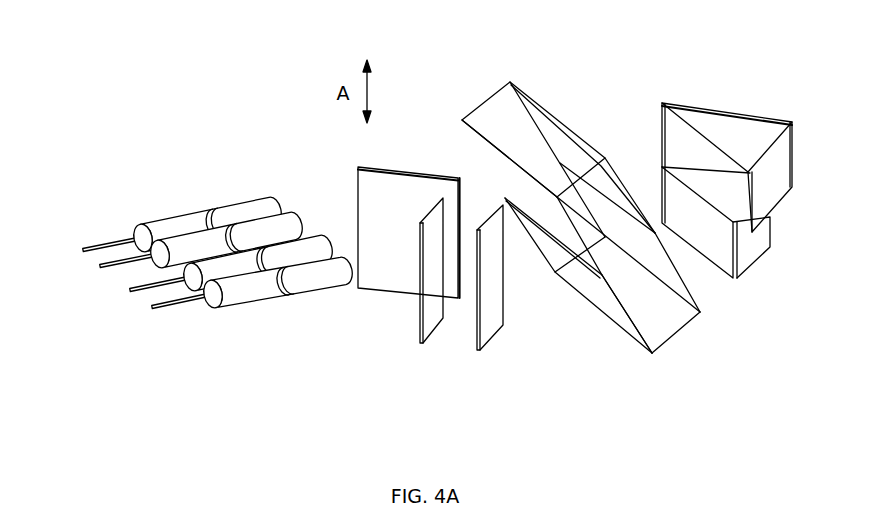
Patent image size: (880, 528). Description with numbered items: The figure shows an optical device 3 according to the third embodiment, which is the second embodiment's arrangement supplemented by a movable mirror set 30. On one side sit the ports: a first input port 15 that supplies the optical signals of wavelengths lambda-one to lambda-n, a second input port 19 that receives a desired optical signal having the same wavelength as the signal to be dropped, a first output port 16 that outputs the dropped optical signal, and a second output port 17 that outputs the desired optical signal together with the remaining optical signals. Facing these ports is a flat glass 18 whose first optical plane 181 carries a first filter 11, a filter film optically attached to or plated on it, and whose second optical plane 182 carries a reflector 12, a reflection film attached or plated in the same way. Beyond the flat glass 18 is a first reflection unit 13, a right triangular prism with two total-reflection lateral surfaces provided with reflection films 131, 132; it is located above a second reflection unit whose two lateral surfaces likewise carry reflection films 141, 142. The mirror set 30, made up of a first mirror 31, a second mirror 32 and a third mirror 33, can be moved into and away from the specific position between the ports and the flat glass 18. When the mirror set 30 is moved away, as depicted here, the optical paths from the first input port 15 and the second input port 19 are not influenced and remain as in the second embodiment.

The optical device 3 is at (189, 102).
The first input port 15 is at (178, 227).
The second input port 19 is at (215, 240).
The second output port 17 is at (290, 252).
The first output port 16 is at (320, 280).
The mirror set 30 is at (439, 305).
The first mirror 31 is at (385, 280).
The second mirror 32 is at (432, 320).
The third mirror 33 is at (498, 300).
The first filter 11 is at (549, 167).
The flat glass 18 is at (497, 103).
The second optical plane 182 is at (493, 163).
The reflector 12 is at (635, 281).
The first optical plane 181 is at (653, 253).
The first reflection unit 13 is at (741, 143).
The reflection film 131 is at (707, 110).
The reflection film 132 is at (783, 182).
The reflection film 141 is at (655, 180).
The reflection film 142 is at (760, 240).